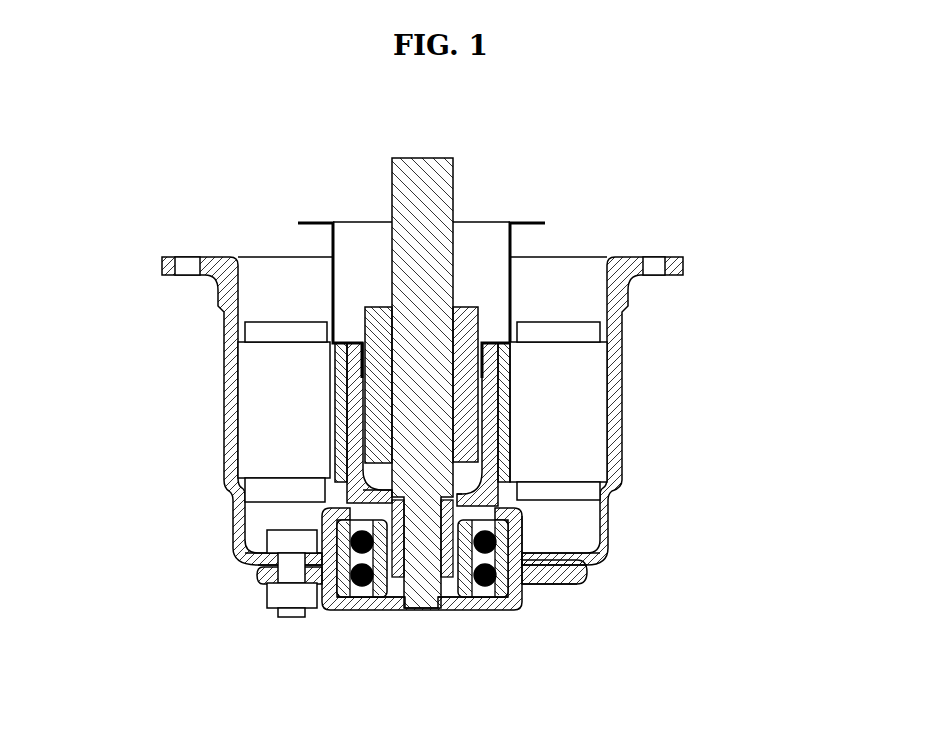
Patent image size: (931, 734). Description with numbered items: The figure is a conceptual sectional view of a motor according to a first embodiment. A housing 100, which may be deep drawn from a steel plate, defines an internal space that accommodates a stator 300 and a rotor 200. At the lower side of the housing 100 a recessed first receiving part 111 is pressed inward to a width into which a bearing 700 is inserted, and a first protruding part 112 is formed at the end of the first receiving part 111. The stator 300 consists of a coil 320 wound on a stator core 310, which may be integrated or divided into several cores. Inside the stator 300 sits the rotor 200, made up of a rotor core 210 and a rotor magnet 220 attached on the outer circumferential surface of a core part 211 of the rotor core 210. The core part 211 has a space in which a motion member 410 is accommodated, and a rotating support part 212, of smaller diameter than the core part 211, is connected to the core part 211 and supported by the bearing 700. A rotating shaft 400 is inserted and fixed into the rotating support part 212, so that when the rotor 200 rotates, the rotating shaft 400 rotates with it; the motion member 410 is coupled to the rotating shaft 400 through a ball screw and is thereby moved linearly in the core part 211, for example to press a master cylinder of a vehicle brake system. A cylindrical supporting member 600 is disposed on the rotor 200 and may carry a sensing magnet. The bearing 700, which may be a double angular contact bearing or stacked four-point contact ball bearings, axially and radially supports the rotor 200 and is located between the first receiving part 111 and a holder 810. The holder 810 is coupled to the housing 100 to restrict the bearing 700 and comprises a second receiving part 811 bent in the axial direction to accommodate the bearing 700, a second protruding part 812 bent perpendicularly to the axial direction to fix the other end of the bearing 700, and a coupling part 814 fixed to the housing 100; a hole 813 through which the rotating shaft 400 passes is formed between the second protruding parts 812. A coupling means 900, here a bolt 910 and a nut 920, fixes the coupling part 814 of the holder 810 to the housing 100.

The housing 100 is at (625, 293).
The first receiving part 111 is at (519, 513).
The first protruding part 112 is at (516, 498).
The rotor 200 is at (287, 439).
The rotor core 210 is at (313, 439).
The core part 211 is at (350, 433).
The rotating support part 212 is at (393, 535).
The rotor magnet 220 is at (342, 362).
The stator 300 is at (524, 412).
The stator core 310 is at (597, 413).
The coil 320 is at (606, 330).
The rotating shaft 400 is at (557, 383).
The motion member 410 is at (468, 447).
The supporting member 600 is at (524, 222).
The bearing 700 is at (590, 580).
The holder 810 is at (469, 612).
The second receiving part 811 is at (525, 603).
The second protruding part 812 is at (510, 610).
The hole 813 is at (470, 603).
The coupling part 814 is at (569, 624).
The coupling means 900 is at (218, 580).
The bolt 910 is at (277, 542).
The nut 920 is at (272, 597).